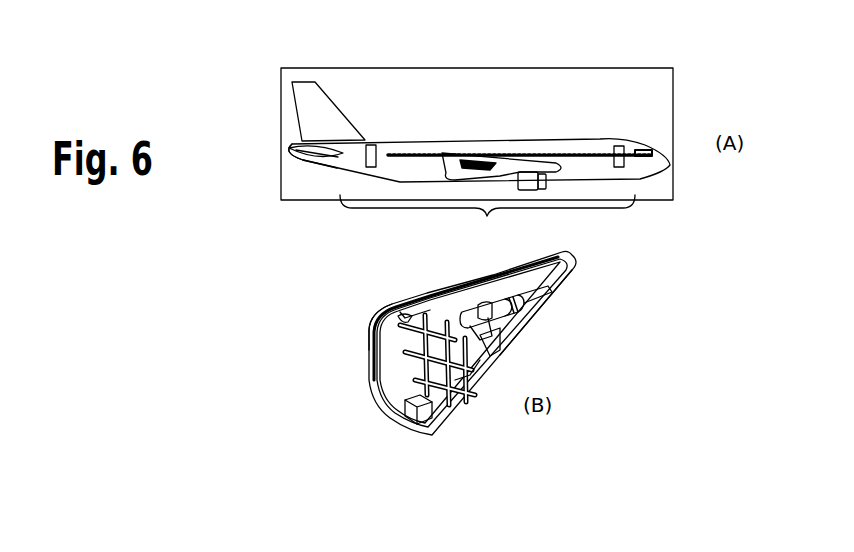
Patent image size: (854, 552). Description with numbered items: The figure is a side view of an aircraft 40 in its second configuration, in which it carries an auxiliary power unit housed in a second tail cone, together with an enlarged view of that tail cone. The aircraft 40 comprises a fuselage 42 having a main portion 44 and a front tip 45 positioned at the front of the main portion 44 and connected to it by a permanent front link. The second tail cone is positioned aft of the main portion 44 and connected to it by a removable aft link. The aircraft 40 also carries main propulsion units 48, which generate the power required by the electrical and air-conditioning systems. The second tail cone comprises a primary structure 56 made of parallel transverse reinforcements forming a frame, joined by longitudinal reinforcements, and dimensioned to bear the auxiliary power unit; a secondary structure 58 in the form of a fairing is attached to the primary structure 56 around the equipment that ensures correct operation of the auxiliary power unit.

The aircraft 40 is at (440, 118).
The fuselage 42 is at (510, 139).
The main portion 44 is at (487, 222).
The front tip 45 is at (672, 165).
The main propulsion units 48 is at (537, 192).
The primary structure 56 is at (436, 272).
The secondary structure 58 is at (557, 317).